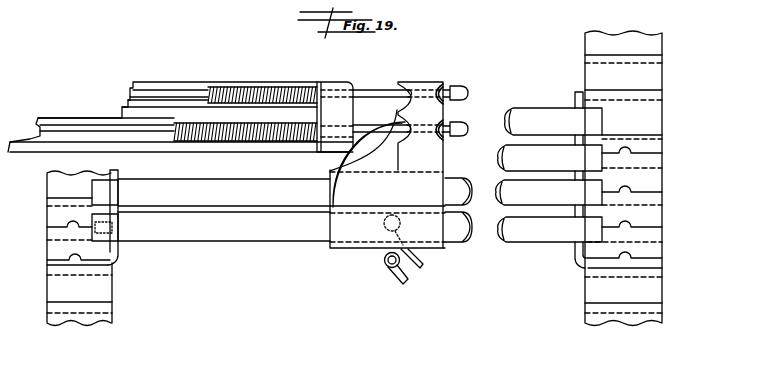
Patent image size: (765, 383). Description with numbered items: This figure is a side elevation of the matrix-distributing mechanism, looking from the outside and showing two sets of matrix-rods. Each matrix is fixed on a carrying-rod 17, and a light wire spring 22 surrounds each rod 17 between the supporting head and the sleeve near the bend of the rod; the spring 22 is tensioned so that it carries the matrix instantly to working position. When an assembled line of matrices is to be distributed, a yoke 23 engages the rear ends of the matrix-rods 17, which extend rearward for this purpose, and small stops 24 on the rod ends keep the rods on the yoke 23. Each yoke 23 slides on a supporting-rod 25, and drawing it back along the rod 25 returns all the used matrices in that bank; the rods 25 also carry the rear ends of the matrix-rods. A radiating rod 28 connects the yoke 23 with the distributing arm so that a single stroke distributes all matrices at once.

The carrying-rod 17 is at (173, 132).
The wire spring 22 is at (181, 133).
The yoke 23 is at (418, 85).
The stop 24 is at (468, 93).
The supporting-rod 25 is at (551, 118).
The radiating rod 28 is at (421, 267).